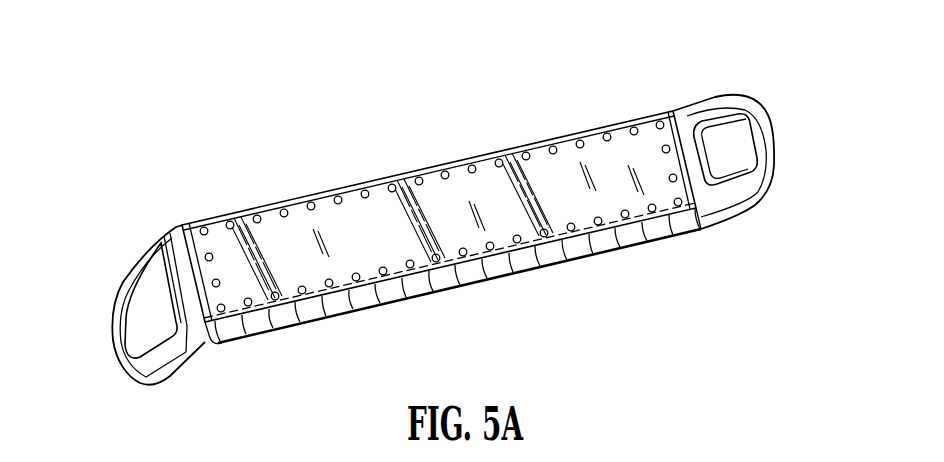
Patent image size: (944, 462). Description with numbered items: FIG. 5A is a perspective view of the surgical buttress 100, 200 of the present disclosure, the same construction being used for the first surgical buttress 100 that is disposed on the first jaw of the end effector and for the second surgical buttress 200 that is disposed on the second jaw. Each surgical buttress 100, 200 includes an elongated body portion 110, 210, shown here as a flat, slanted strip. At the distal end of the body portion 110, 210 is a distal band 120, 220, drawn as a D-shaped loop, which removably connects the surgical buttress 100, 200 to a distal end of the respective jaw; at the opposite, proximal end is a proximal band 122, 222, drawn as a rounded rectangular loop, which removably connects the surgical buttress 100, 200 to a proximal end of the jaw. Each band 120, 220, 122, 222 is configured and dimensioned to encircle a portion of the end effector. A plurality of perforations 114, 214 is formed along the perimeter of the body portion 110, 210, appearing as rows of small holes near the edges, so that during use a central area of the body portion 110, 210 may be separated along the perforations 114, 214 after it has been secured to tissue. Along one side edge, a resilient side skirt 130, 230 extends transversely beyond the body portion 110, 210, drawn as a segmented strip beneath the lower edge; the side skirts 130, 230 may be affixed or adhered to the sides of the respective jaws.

The first surgical buttress 100 is at (443, 208).
The second surgical buttress 200 is at (398, 135).
The body portion 110 is at (439, 203).
The body portion 210 is at (492, 195).
The perforations 114 is at (441, 216).
The perforations 214 is at (257, 214).
The distal band 120 is at (158, 278).
The distal band 220 is at (135, 258).
The proximal band 122 is at (723, 130).
The proximal band 222 is at (700, 98).
The resilient side skirt 130 is at (468, 276).
The resilient side skirt 230 is at (607, 252).